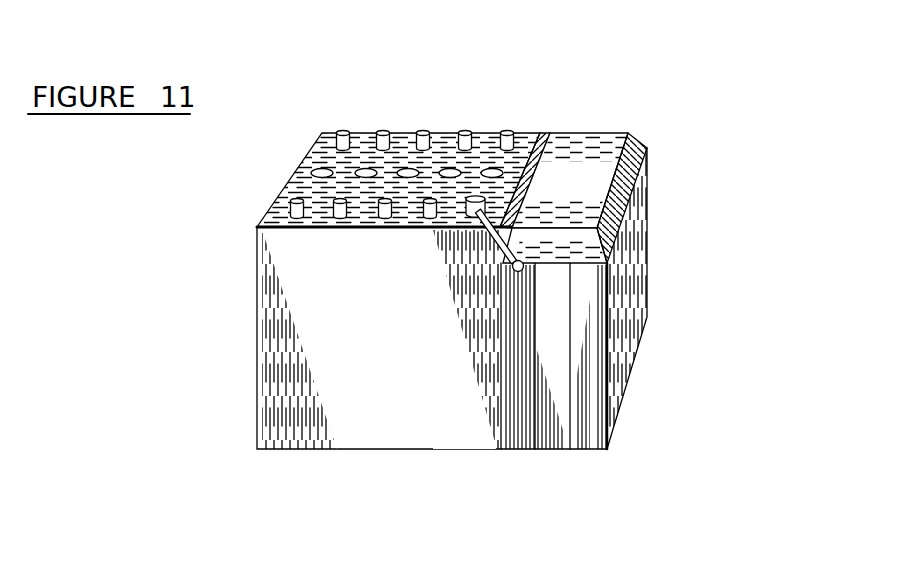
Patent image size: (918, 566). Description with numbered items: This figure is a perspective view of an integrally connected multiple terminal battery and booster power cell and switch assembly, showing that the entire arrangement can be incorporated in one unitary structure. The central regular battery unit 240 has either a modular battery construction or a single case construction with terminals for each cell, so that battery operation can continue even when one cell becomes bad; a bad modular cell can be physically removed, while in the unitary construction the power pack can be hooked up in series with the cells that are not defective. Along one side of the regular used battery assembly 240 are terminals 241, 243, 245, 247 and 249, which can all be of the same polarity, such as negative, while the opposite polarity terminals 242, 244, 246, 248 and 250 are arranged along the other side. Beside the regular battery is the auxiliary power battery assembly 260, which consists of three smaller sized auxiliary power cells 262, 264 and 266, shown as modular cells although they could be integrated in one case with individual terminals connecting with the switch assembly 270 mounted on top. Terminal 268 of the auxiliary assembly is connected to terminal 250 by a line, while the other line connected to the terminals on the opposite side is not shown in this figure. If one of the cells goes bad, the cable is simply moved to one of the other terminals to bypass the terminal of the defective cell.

The central regular battery unit 240 is at (320, 84).
The terminal 241 is at (337, 130).
The terminal 242 is at (292, 200).
The terminal 243 is at (383, 131).
The terminal 244 is at (334, 212).
The terminal 245 is at (423, 131).
The terminal 246 is at (378, 214).
The terminal 247 is at (465, 131).
The terminal 248 is at (424, 214).
The terminal 249 is at (507, 131).
The terminal 250 is at (464, 220).
The auxiliary power battery assembly 260 is at (660, 298).
The auxiliary power cell 262 is at (520, 447).
The auxiliary power cell 264 is at (558, 447).
The auxiliary power cell 266 is at (592, 445).
The terminal 268 is at (514, 272).
The switch assembly 270 is at (587, 145).